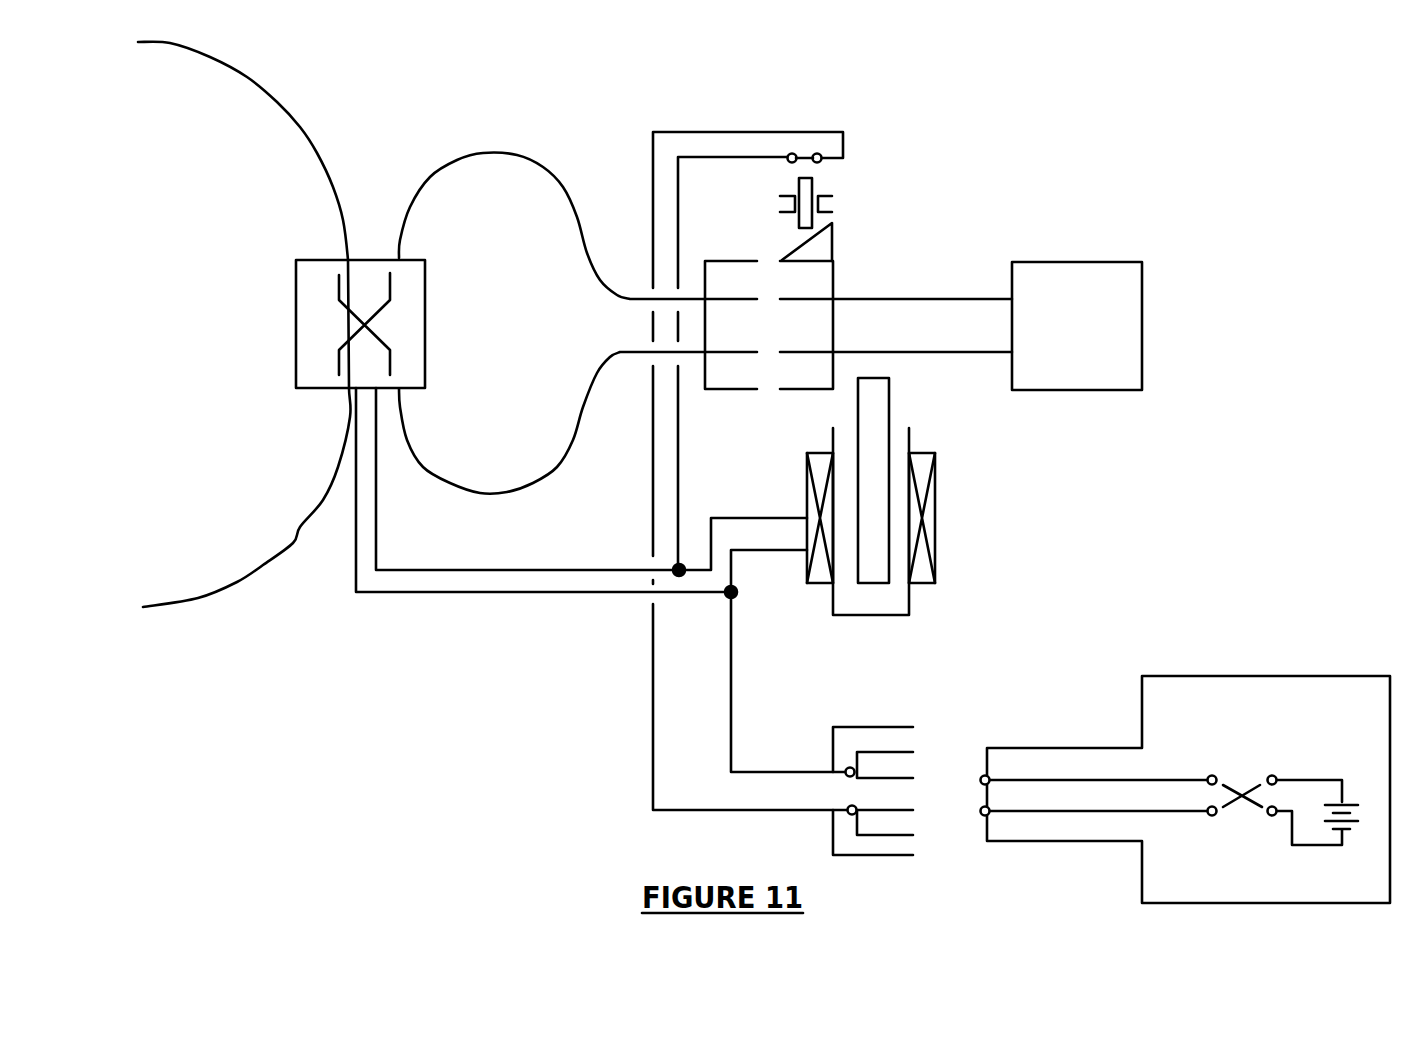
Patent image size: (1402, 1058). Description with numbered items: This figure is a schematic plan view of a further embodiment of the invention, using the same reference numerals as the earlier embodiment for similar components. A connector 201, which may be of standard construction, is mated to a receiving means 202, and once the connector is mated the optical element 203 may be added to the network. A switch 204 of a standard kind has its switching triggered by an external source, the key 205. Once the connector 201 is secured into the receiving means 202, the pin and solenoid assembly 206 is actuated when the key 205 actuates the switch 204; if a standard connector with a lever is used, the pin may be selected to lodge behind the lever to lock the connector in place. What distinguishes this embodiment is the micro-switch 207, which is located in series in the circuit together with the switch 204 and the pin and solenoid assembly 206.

The connector 201 is at (833, 273).
The receiving means 202 is at (710, 265).
The optical element 203 is at (1086, 284).
The switch 204 is at (363, 260).
The key 205 is at (1262, 673).
The pin and solenoid assembly 206 is at (948, 505).
The micro-switch 207 is at (815, 190).